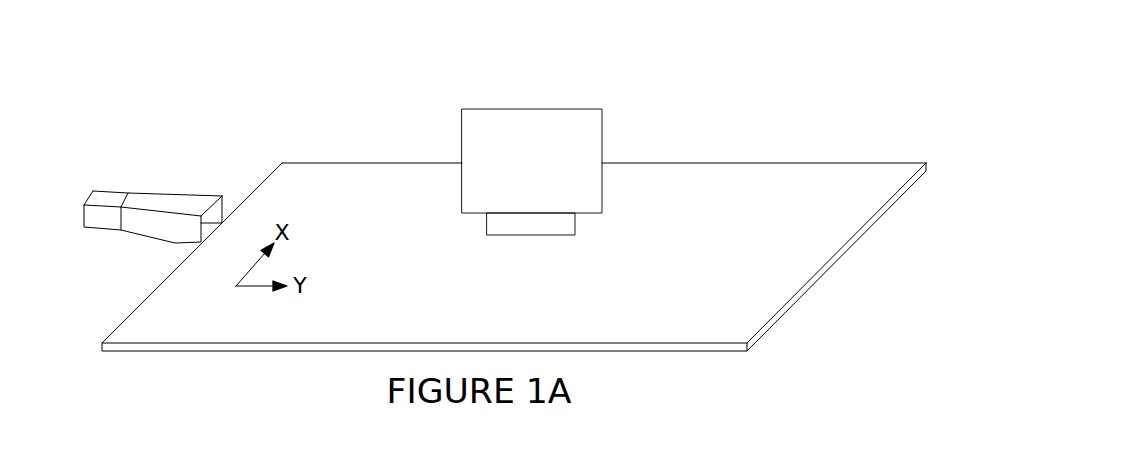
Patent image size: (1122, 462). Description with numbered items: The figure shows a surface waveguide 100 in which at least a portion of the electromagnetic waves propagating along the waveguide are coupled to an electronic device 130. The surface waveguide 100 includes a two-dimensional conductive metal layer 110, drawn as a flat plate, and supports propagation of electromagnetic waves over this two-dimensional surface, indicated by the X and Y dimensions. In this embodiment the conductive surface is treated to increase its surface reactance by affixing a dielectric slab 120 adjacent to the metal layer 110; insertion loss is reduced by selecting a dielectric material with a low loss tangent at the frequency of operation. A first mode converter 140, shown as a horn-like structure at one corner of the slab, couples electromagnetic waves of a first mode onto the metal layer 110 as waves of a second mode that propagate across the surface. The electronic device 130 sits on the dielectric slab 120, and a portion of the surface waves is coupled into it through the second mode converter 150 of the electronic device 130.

The surface waveguide 100 is at (514, 257).
The metal layer 110 is at (659, 352).
The dielectric slab 120 is at (355, 170).
The electronic device 130 is at (532, 161).
The first mode converter 140 is at (149, 199).
The second mode converter 150 is at (578, 225).